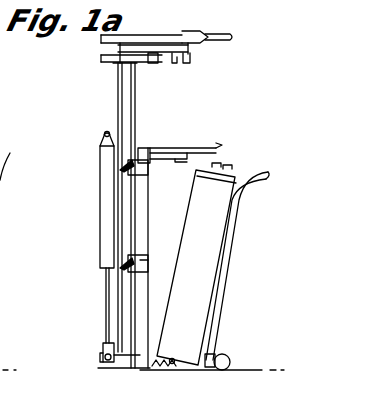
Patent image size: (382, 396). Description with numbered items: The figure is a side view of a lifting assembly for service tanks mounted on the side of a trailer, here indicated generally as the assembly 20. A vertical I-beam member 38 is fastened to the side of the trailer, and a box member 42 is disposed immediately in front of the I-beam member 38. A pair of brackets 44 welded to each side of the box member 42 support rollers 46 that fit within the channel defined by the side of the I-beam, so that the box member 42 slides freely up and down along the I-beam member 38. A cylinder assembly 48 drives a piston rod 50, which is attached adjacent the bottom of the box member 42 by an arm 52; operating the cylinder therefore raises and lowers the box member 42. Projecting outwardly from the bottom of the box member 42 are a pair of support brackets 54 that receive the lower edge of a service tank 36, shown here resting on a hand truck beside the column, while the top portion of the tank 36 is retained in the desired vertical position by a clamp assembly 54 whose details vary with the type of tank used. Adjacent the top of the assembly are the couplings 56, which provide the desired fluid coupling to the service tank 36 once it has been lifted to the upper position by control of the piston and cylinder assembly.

The lifting and transporting device 20 is at (12, 155).
The service tank 36 is at (203, 276).
The I-beam member 38 is at (125, 68).
The box member 42 is at (138, 316).
The brackets 44 is at (106, 137).
The rollers 46 is at (128, 164).
The cylinder assembly 48 is at (105, 198).
The piston rod 50 is at (142, 289).
The arm 52 is at (103, 364).
The support brackets 54 is at (200, 146).
The couplings 56 is at (207, 50).